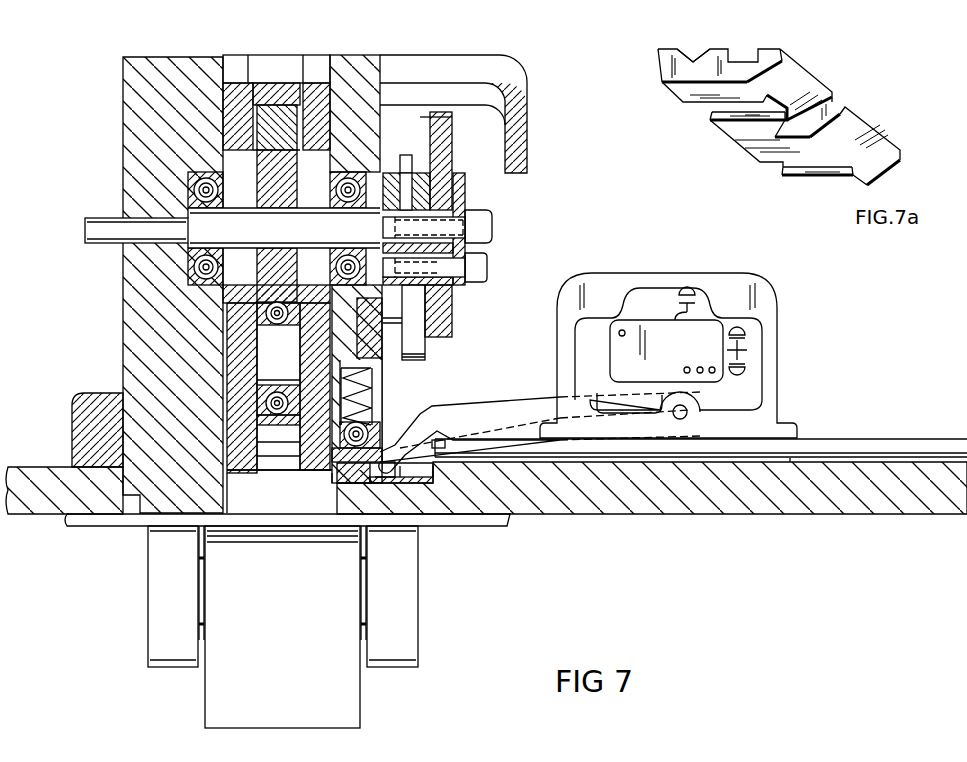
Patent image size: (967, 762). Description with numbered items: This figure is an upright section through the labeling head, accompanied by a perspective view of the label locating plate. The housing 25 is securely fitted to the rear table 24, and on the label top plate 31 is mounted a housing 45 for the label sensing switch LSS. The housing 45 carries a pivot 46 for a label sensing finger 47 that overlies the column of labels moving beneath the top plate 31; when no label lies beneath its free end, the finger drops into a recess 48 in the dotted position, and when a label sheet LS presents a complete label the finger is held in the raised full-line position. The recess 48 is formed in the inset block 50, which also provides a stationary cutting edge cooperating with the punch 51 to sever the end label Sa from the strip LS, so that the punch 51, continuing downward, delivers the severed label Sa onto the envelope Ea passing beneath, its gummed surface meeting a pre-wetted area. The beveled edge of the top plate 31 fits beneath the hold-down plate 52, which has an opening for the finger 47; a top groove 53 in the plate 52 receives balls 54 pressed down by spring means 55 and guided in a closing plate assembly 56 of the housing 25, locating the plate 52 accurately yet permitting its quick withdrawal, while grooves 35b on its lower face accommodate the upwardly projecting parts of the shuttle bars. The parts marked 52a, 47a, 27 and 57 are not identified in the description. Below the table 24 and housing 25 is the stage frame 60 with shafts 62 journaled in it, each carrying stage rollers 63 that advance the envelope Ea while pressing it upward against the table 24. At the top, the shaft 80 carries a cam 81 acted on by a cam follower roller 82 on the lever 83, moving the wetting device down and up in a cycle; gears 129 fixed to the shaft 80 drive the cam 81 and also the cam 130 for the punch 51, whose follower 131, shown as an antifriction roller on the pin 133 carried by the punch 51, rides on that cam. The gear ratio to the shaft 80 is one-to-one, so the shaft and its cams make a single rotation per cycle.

In FIG. 7, the table 24 is at (4, 472).
In FIG. 7, the housing 25 is at (123, 143).
In FIG. 7, the hooked arm 27 is at (528, 150).
In FIG. 7, the label top plate 31 is at (806, 446).
In FIG. 7A, the grooves 35b is at (700, 105).
In FIG. 7, the housing 45 is at (773, 354).
In FIG. 7, the pivot 46 is at (688, 410).
In FIG. 7, the label sensing finger 47 is at (450, 408).
In FIG. 7A, the riser face of pawl step 47a is at (833, 104).
In FIG. 7, the recess 48 is at (415, 468).
In FIG. 7, the inset block 50 is at (435, 470).
In FIG. 7, the punch 51 is at (256, 396).
In FIG. 7, the hold-down plate 52 is at (393, 450).
In FIG. 7A, the hold-down plate 52 is at (650, 78).
In FIG. 7A, the inclined face 52a is at (782, 85).
In FIG. 7, the top groove 53 is at (327, 480).
In FIG. 7A, the top groove 53 is at (687, 56).
In FIG. 7, the balls 54 is at (330, 440).
In FIG. 7, the spring means 55 is at (372, 396).
In FIG. 7, the closing plate assembly 56 is at (333, 57).
In FIG. 7, the spacer 57 is at (330, 453).
In FIG. 7, the stage frame 60 is at (357, 718).
In FIG. 7, the shafts 62 is at (367, 612).
In FIG. 7, the stage rollers 63 is at (418, 648).
In FIG. 7, the shaft 80 is at (85, 229).
In FIG. 7, the cam 81 is at (403, 155).
In FIG. 7, the cam follower roller 82 is at (427, 350).
In FIG. 7, the lever 83 is at (385, 358).
In FIG. 7, the gears 129 is at (452, 122).
In FIG. 7, the cam 130 is at (288, 184).
In FIG. 7, the follower roller 131 is at (330, 298).
In FIG. 7, the pin 133 is at (272, 358).
In FIG. 7, the end label Sa is at (268, 482).
In FIG. 7, the envelope Ea is at (125, 528).
In FIG. 7, the label sensing switch LSS is at (713, 330).
In FIG. 7, the label sheet LS is at (790, 460).